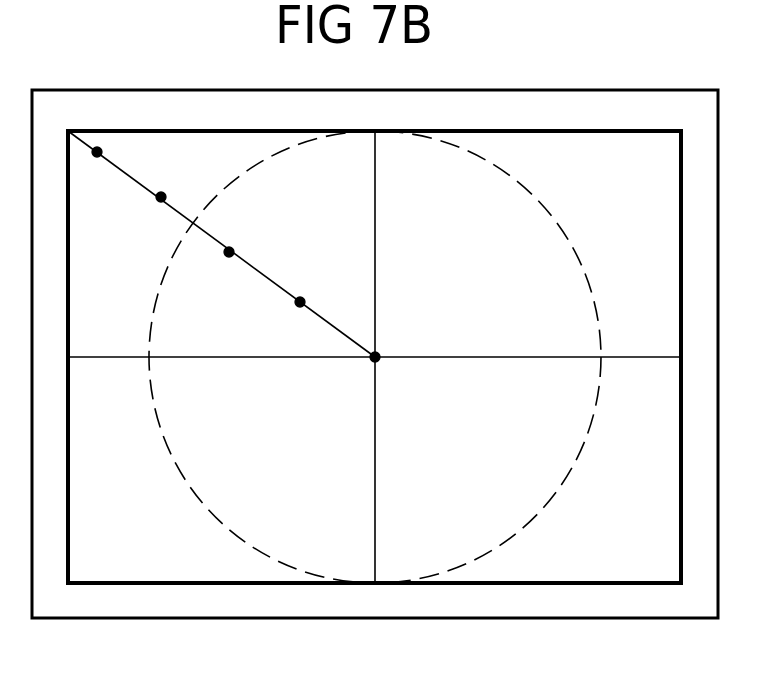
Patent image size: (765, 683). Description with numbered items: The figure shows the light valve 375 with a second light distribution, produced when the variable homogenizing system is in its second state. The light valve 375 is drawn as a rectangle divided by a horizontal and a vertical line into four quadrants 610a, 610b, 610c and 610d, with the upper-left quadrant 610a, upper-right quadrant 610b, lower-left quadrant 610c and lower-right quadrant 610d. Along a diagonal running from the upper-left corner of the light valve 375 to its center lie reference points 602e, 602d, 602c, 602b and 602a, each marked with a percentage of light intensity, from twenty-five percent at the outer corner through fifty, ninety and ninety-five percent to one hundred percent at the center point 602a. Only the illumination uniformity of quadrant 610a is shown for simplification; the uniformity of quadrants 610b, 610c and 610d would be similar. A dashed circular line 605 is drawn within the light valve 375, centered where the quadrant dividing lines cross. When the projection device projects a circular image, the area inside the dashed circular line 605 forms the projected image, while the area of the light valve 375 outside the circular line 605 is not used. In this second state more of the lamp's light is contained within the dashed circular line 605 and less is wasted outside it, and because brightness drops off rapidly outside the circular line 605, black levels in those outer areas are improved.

The light valve 375 is at (647, 78).
The dashed circular line 605 is at (580, 249).
The reference point 602a is at (386, 355).
The reference point 602b is at (311, 300).
The reference point 602c is at (240, 250).
The reference point 602d is at (171, 196).
The reference point 602e is at (107, 152).
The quadrant 610a is at (332, 197).
The quadrant 610b is at (453, 197).
The quadrant 610c is at (340, 557).
The quadrant 610d is at (464, 557).